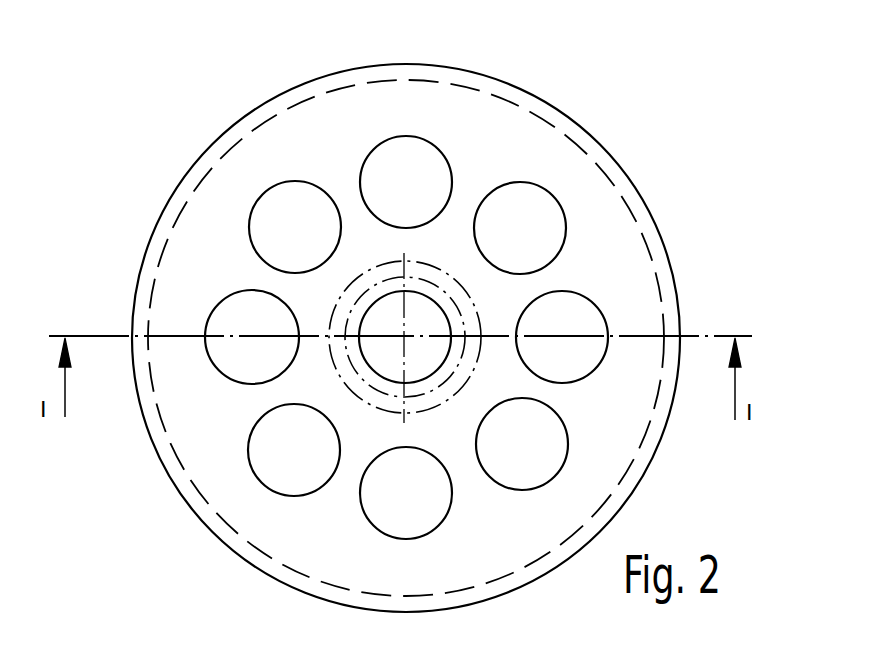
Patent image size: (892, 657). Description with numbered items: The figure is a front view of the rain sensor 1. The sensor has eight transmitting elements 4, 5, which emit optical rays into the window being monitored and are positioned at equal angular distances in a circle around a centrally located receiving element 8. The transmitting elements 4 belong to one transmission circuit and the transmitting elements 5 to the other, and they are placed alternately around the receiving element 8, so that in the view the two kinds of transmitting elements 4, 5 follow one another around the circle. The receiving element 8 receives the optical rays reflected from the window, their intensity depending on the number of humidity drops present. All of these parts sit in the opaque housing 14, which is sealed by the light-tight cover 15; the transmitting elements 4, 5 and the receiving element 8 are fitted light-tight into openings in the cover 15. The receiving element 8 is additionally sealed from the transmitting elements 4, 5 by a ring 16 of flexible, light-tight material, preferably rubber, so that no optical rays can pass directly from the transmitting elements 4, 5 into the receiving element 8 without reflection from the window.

The rain sensor 1 is at (673, 174).
The transmitting elements 4 is at (397, 193).
The transmitting elements 5 is at (287, 236).
The receiving element 8 is at (392, 331).
The housing 14 is at (660, 268).
The cover 15 is at (500, 148).
The ring 16 is at (418, 403).